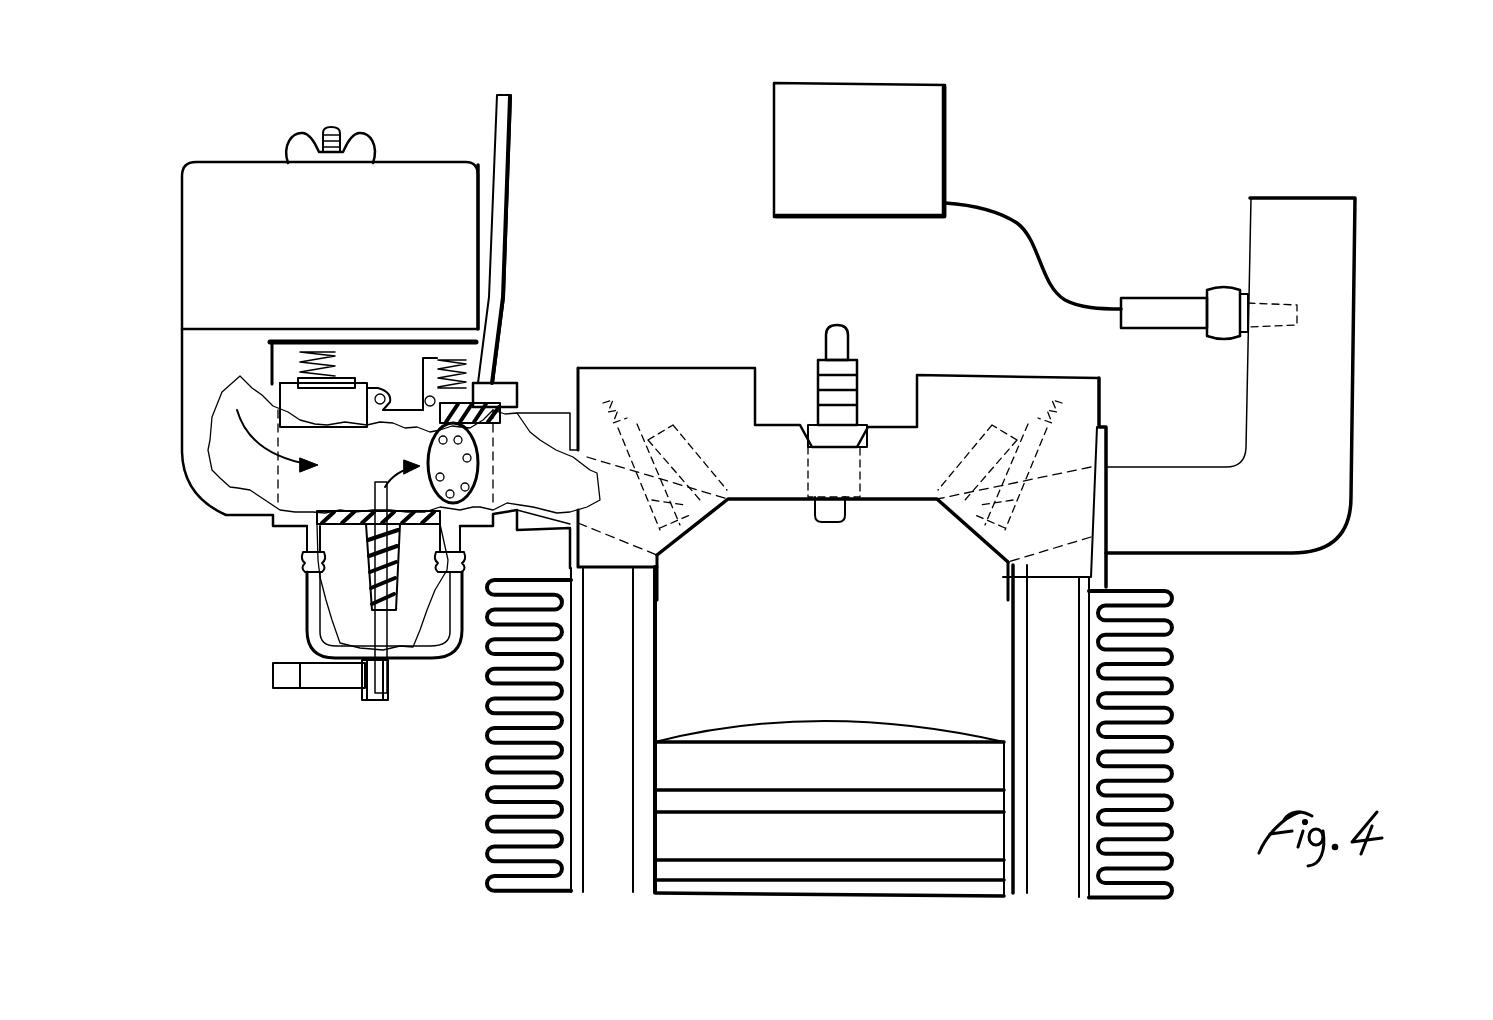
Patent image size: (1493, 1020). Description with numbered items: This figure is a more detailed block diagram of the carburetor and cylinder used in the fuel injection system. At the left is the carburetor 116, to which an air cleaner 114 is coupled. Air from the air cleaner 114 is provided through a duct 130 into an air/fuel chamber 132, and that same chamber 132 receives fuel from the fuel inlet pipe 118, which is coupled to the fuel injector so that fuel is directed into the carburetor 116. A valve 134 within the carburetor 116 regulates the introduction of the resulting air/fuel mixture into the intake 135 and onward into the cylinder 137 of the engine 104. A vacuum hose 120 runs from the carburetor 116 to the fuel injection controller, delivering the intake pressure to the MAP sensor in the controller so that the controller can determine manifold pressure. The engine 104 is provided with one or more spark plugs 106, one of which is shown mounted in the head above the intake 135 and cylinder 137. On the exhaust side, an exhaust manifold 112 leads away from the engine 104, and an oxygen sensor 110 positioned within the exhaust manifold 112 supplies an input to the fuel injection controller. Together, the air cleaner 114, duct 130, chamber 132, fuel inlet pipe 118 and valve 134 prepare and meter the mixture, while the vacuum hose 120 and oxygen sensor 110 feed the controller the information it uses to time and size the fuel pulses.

The engine 104 is at (960, 370).
The spark plug 106 is at (870, 352).
The oxygen sensor 110 is at (1224, 290).
The exhaust manifold 112 is at (1355, 416).
The air cleaner 114 is at (243, 162).
The carburetor 116 is at (498, 368).
The fuel inlet pipe 118 is at (358, 712).
The vacuum hose 120 is at (511, 194).
The duct 130 is at (258, 486).
The air/fuel chamber 132 is at (432, 660).
The valve 134 is at (462, 460).
The intake 135 is at (700, 545).
The cylinder 137 is at (940, 680).